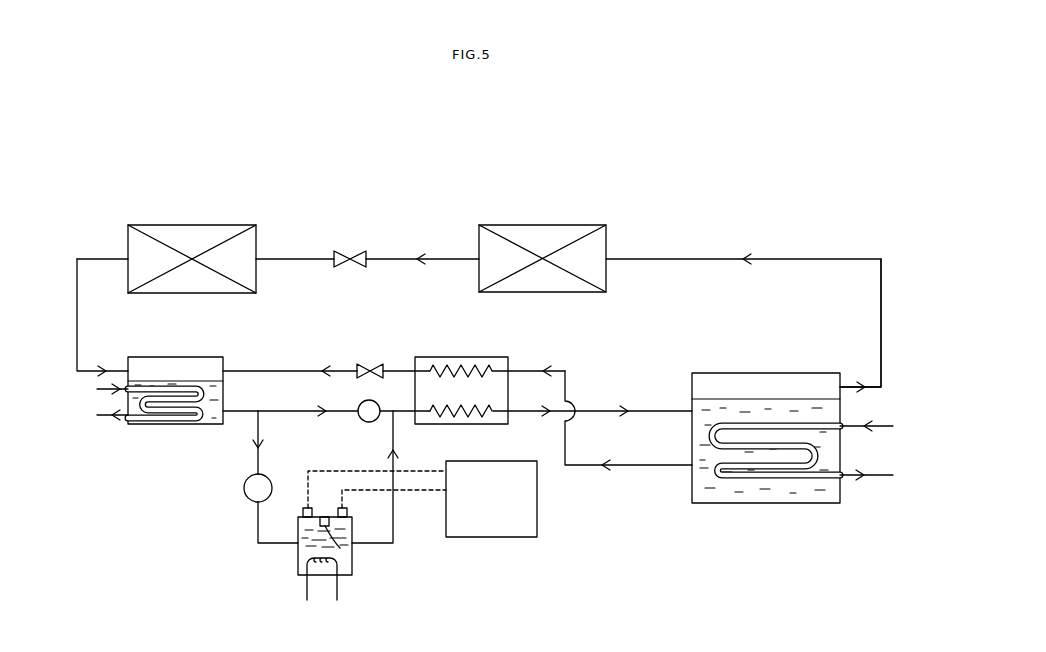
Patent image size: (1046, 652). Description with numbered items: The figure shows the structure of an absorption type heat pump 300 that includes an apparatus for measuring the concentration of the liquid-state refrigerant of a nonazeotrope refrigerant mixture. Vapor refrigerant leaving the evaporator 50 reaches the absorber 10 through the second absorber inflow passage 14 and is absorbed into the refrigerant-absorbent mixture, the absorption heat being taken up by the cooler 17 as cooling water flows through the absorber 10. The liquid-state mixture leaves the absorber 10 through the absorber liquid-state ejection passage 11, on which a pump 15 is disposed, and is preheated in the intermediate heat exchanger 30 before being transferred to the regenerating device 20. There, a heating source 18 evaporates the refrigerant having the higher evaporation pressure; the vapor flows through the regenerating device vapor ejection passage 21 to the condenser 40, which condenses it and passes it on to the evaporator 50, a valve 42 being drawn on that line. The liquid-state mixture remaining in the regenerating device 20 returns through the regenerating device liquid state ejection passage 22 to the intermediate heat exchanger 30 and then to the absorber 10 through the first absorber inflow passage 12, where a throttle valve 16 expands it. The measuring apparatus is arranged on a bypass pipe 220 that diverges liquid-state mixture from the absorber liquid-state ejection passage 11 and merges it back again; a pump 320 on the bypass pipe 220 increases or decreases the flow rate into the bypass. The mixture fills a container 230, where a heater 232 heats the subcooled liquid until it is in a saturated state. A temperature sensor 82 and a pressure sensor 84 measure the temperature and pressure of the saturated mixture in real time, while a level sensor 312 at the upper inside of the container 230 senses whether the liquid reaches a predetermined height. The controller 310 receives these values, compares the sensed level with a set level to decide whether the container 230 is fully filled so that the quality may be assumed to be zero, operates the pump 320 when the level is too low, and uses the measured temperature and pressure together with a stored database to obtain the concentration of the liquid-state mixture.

The absorption type heat pump 300 is at (714, 130).
The evaporator 50 is at (236, 225).
The valve 42 is at (344, 250).
The condenser 40 is at (585, 225).
The second absorber inflow passage 14 is at (92, 368).
The absorber 10 is at (177, 390).
The cooler 17 is at (145, 424).
The first absorber inflow passage 12 is at (258, 371).
The throttle valve 16 is at (361, 365).
The intermediate heat exchanger 30 is at (490, 357).
The absorber liquid-state ejection passage 11 is at (242, 409).
The pump 15 is at (379, 417).
The regenerating device liquid state ejection passage 22 is at (668, 467).
The bypass pipe 220 is at (262, 421).
The pump 320 is at (247, 499).
The container 230 is at (345, 532).
The temperature sensor 82 is at (304, 508).
The pressure sensor 84 is at (341, 508).
The level sensor 312 is at (338, 548).
The heater 232 is at (344, 592).
The controller 310 is at (538, 512).
The regenerating device 20 is at (794, 430).
The heating source 18 is at (878, 478).
The regenerating device vapor ejection passage 21 is at (884, 374).